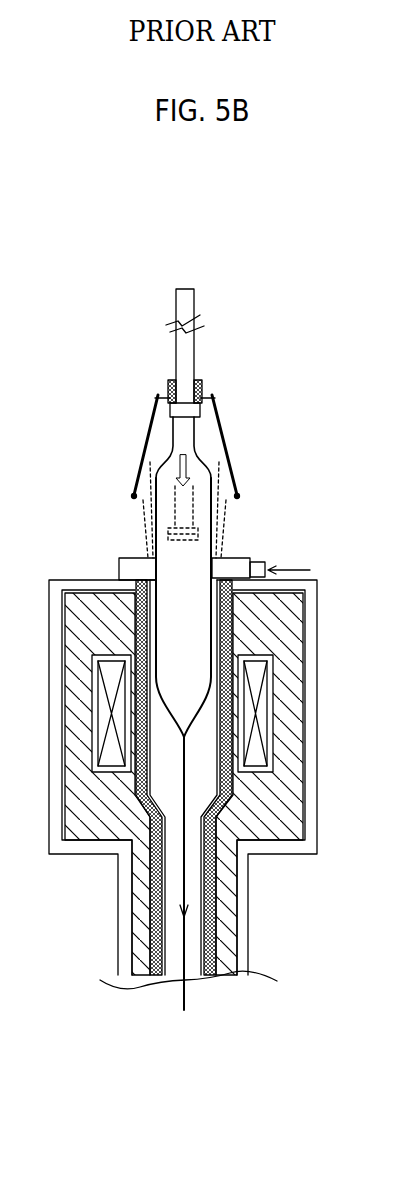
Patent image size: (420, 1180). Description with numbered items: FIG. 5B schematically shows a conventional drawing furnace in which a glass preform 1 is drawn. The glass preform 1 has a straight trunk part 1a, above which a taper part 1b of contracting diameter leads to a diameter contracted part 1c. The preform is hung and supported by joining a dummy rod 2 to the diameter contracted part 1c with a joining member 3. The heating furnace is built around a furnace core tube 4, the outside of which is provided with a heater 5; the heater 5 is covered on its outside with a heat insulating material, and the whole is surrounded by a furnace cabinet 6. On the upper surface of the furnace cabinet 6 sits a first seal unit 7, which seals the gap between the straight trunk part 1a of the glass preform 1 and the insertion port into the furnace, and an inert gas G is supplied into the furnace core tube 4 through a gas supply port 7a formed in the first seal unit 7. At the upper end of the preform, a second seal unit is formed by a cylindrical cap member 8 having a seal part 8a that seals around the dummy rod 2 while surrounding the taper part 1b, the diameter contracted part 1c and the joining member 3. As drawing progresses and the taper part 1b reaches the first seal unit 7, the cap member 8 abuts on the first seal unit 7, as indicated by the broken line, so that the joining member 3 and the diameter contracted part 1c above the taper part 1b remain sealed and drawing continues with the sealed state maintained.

The glass preform 1 is at (200, 652).
The straight trunk part 1a is at (213, 537).
The taper part 1b is at (194, 462).
The diameter contracted part 1c is at (202, 417).
The dummy rod 2 is at (191, 351).
The joining member 3 is at (158, 403).
The furnace core tube 4 is at (138, 633).
The heater 5 is at (265, 688).
The furnace cabinet 6 is at (318, 741).
The first seal unit 7 is at (118, 570).
The gas supply port 7a is at (262, 558).
The cap member 8 is at (149, 461).
The seal part 8a is at (171, 379).
The gas G is at (290, 570).